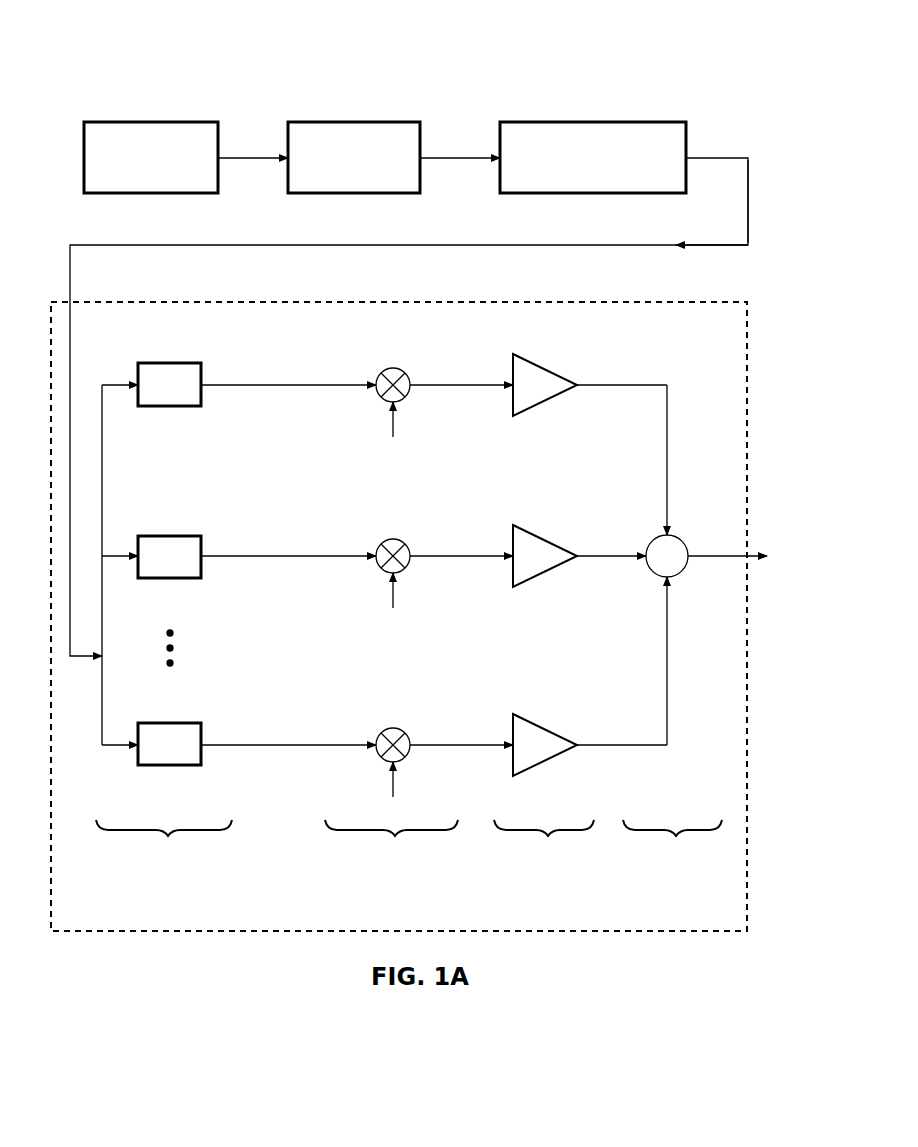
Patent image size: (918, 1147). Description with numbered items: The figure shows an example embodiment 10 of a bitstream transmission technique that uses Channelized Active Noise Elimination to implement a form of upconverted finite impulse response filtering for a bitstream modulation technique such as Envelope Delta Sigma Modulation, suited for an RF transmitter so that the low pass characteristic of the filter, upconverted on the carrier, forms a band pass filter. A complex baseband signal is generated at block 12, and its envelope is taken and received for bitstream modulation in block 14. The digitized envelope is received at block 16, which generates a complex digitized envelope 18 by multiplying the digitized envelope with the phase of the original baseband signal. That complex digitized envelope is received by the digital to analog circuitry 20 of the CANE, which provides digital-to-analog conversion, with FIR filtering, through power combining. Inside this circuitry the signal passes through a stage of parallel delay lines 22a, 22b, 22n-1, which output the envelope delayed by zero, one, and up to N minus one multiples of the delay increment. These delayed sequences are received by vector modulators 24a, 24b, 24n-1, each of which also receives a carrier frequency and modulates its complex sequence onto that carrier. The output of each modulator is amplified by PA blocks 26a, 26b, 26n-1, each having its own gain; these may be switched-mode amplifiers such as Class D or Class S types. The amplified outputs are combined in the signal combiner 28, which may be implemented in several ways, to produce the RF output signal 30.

The bitstream transmission embodiment 10 is at (108, 42).
The complex baseband signal generation 12 is at (188, 122).
The bitstream modulation block 14 is at (333, 122).
The complex digitized envelope block 16 is at (588, 122).
The complex digitized envelope 18 is at (748, 190).
The digital to analog circuitry 20 is at (750, 382).
The delay line 22a is at (178, 363).
The delay line 22b is at (178, 536).
The delay line 22n-1 is at (178, 766).
The vector modulator 24a is at (385, 369).
The vector modulator 24b is at (385, 540).
The vector modulator 24n-1 is at (386, 729).
The PA block 26a is at (530, 355).
The PA block 26b is at (530, 526).
The PA block 26n-1 is at (540, 718).
The signal combiner 28 is at (676, 538).
The output signal 30 is at (690, 568).